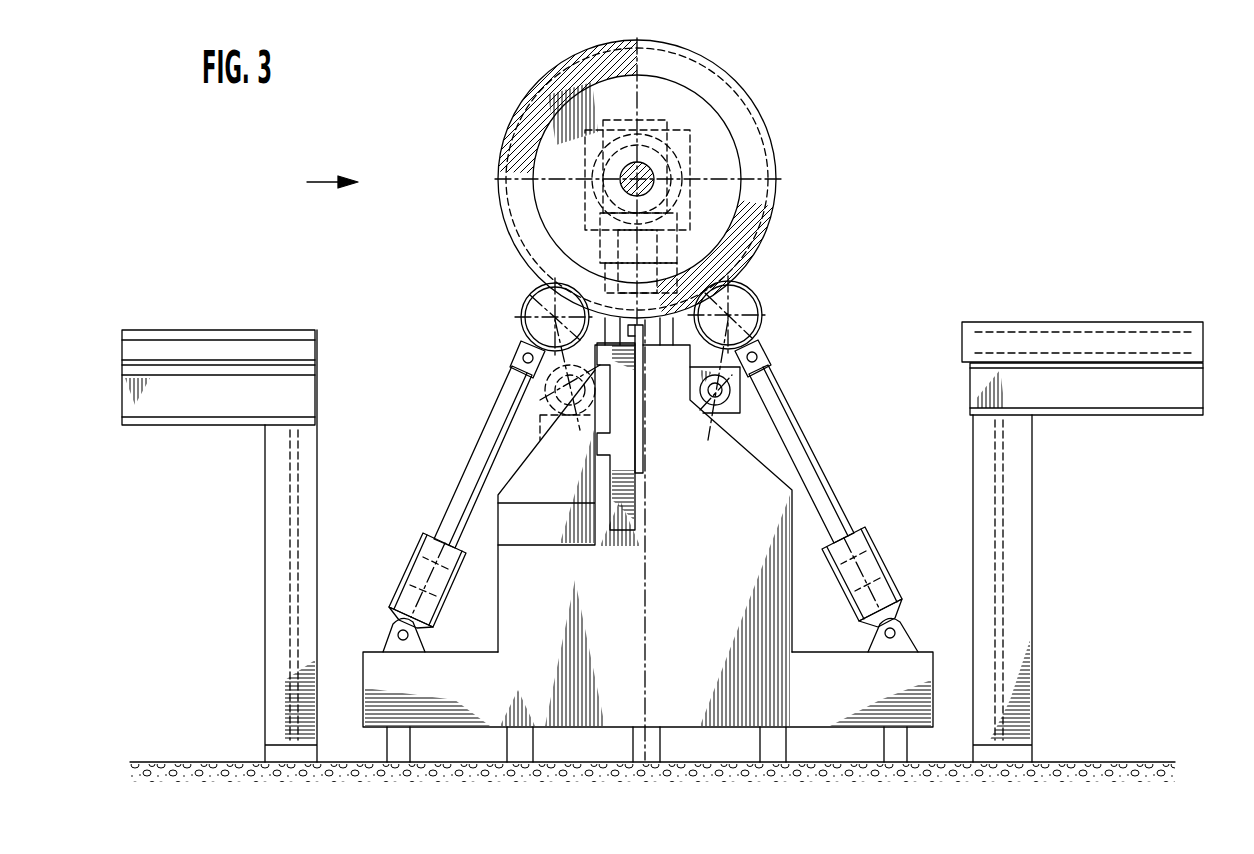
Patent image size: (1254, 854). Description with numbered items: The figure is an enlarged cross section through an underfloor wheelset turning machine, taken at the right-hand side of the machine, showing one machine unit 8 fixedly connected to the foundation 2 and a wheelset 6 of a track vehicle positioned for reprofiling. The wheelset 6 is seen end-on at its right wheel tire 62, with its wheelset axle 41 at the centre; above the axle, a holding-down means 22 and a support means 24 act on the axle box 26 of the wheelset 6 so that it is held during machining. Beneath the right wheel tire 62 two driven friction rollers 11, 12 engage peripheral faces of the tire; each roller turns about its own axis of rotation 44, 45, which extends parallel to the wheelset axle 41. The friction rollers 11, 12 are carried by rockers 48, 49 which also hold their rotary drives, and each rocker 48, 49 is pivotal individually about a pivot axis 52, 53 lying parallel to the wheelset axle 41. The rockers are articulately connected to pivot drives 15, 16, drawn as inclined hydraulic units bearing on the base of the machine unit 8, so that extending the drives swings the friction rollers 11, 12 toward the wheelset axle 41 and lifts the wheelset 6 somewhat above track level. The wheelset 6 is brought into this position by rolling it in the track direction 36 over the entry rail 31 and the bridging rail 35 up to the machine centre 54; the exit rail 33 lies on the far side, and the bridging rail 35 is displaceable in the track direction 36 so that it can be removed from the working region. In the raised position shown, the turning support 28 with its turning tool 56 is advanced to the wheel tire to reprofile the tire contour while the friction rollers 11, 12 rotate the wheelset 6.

The foundation 2 is at (1068, 772).
The wheelset 6 is at (616, 180).
The machine unit 8 is at (918, 651).
The friction roller 11 is at (748, 307).
The friction roller 12 is at (536, 308).
The pivot drive 15 is at (818, 472).
The pivot drive 16 is at (467, 472).
The holding-down means 22 is at (618, 126).
The support means 24 is at (664, 242).
The axle box 26 is at (686, 152).
The turning support 28 is at (624, 540).
The entry rail 31 is at (202, 330).
The exit rail 33 is at (1082, 517).
The bridging rail 35 is at (1005, 324).
The track direction 36 is at (307, 182).
The wheelset axle 41 is at (602, 152).
The axis of rotation 44 is at (760, 314).
The axis of rotation 45 is at (530, 316).
The rocker 48 is at (770, 350).
The rocker 49 is at (518, 350).
The pivot axis 52 is at (700, 413).
The pivot axis 53 is at (584, 410).
The machine centre 54 is at (650, 598).
The turning tool 56 is at (648, 362).
The right wheel tire 62 is at (500, 153).